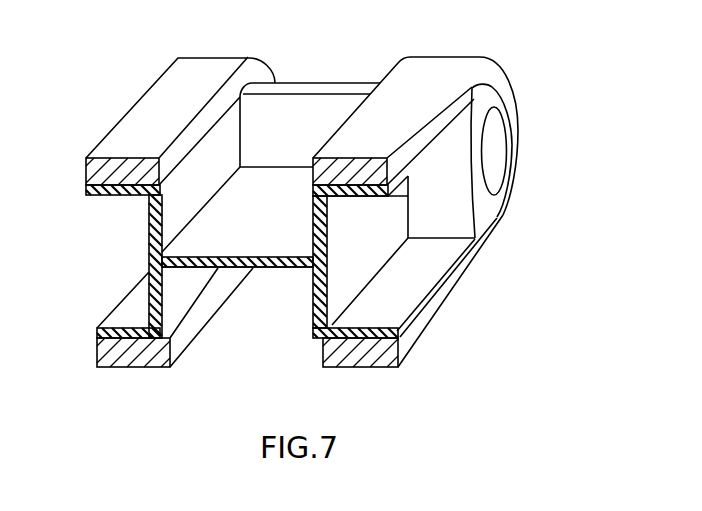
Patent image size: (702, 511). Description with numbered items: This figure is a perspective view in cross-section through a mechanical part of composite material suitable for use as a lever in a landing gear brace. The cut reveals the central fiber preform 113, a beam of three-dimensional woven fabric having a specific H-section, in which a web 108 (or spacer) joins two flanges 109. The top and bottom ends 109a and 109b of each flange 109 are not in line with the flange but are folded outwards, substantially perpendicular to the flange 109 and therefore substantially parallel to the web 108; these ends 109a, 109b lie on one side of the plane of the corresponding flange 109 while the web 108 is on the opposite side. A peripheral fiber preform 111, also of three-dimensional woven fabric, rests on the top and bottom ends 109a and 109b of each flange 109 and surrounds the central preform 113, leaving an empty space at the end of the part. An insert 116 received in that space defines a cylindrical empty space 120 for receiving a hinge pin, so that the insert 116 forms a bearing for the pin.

The web 108 is at (248, 256).
The flange 109 is at (150, 263).
The top end 109a is at (113, 199).
The bottom end 109b is at (120, 328).
The peripheral fiber preform 111 is at (158, 90).
The central fiber preform 113 is at (268, 275).
The insert 116 is at (490, 95).
The cylindrical empty space 120 is at (490, 148).